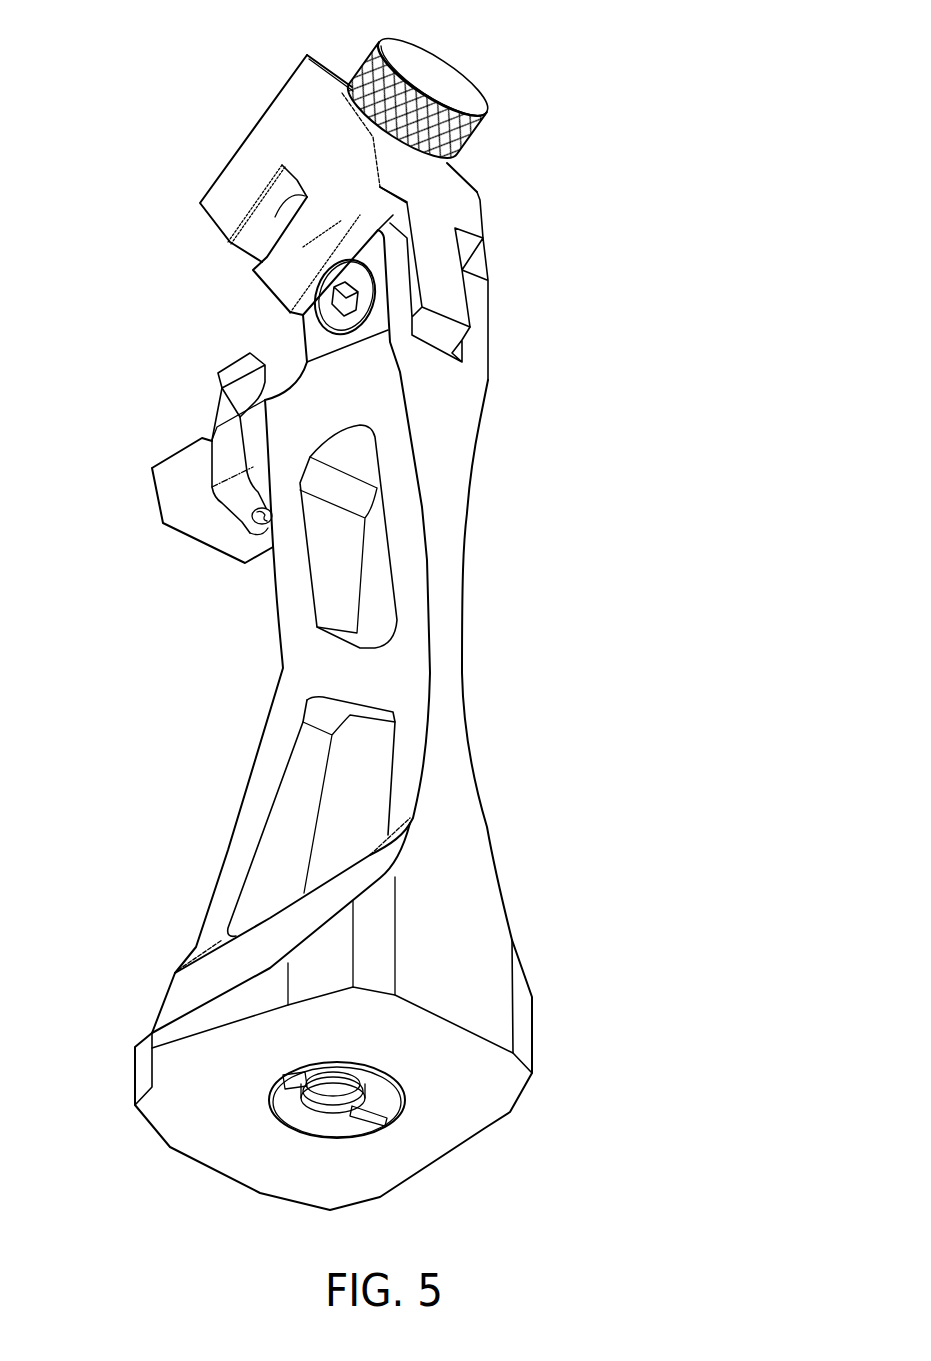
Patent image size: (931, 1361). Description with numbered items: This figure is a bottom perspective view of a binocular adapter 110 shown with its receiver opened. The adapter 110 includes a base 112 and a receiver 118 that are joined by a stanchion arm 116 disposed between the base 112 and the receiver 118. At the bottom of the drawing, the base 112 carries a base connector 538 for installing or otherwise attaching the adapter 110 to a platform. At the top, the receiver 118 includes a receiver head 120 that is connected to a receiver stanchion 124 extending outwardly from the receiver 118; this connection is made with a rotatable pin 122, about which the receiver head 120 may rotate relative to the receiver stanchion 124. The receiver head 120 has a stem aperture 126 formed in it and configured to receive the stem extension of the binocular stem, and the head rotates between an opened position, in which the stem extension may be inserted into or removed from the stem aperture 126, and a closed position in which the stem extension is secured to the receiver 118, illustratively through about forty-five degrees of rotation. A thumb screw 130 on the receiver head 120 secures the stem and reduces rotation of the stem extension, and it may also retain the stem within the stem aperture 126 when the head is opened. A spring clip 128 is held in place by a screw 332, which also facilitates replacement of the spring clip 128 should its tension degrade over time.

The binocular adapter 110 is at (676, 80).
The base 112 is at (508, 920).
The stanchion arm 116 is at (462, 590).
The receiver 118 is at (539, 258).
The receiver head 120 is at (481, 208).
The rotatable pin 122 is at (367, 312).
The receiver stanchion 124 is at (158, 508).
The stem aperture 126 is at (253, 233).
The spring clip 128 is at (216, 400).
The thumb screw 130 is at (454, 67).
The screw 332 is at (265, 530).
The base connector 538 is at (403, 1112).